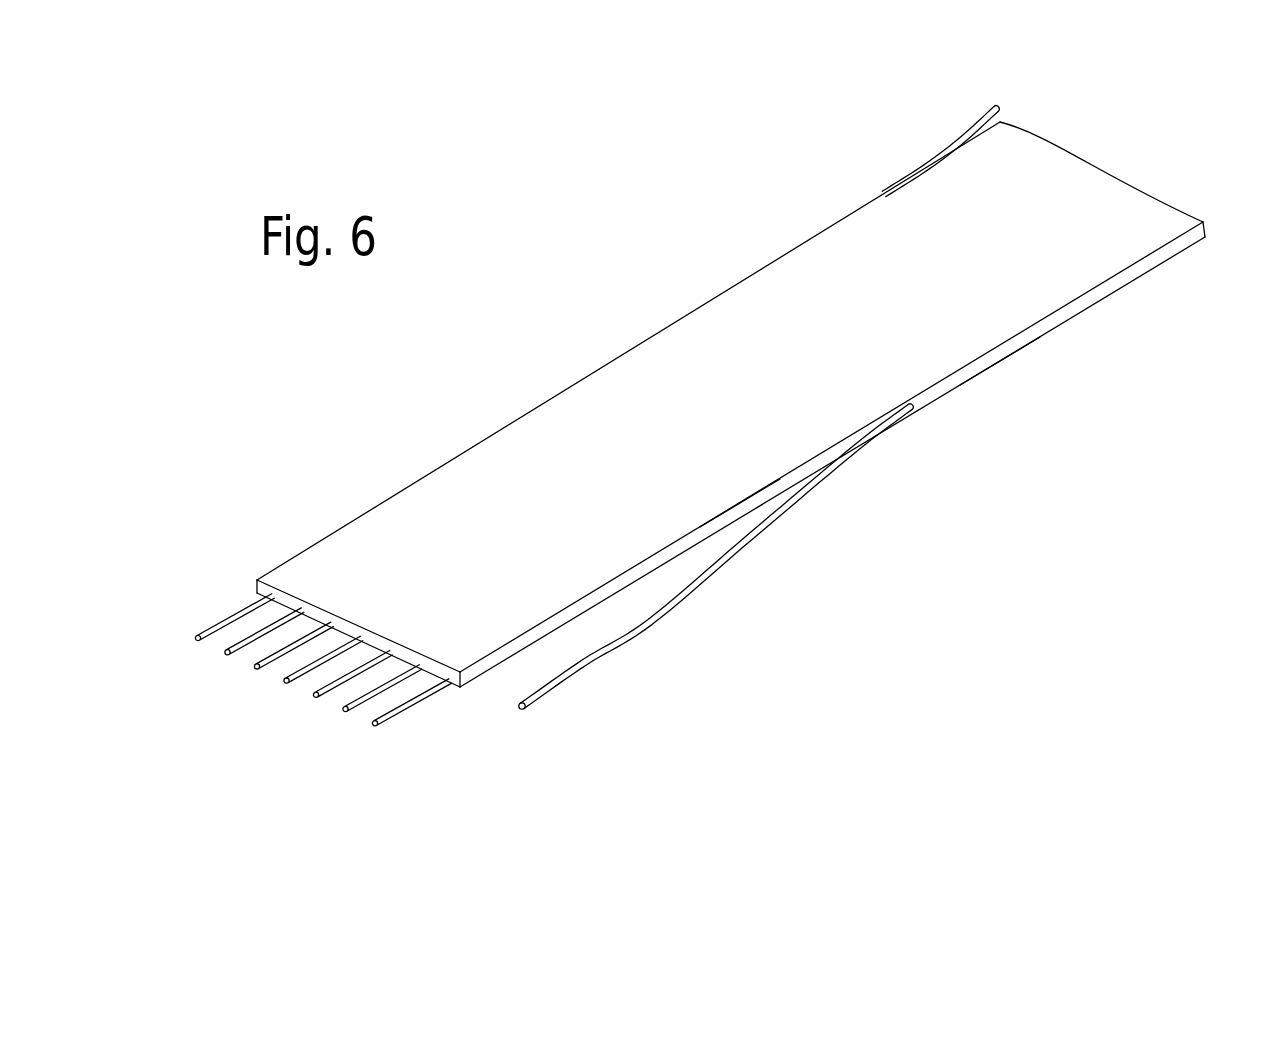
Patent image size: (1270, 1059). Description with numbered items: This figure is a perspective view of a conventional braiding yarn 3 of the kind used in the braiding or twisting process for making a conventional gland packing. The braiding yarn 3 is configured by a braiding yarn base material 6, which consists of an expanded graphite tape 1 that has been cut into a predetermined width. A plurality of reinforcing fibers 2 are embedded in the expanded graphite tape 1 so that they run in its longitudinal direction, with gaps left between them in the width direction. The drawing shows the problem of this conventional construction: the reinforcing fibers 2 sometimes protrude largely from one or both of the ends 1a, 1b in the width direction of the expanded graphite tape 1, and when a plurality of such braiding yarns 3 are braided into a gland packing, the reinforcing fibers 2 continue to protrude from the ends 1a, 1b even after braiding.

The expanded graphite tape 1 is at (777, 263).
The end of the expanded graphite tape 1a is at (257, 587).
The end of the expanded graphite tape 1b is at (740, 553).
The reinforcing fibers 2 is at (918, 157).
The braiding yarn 3 is at (955, 392).
The braiding yarn base material 6 is at (510, 423).